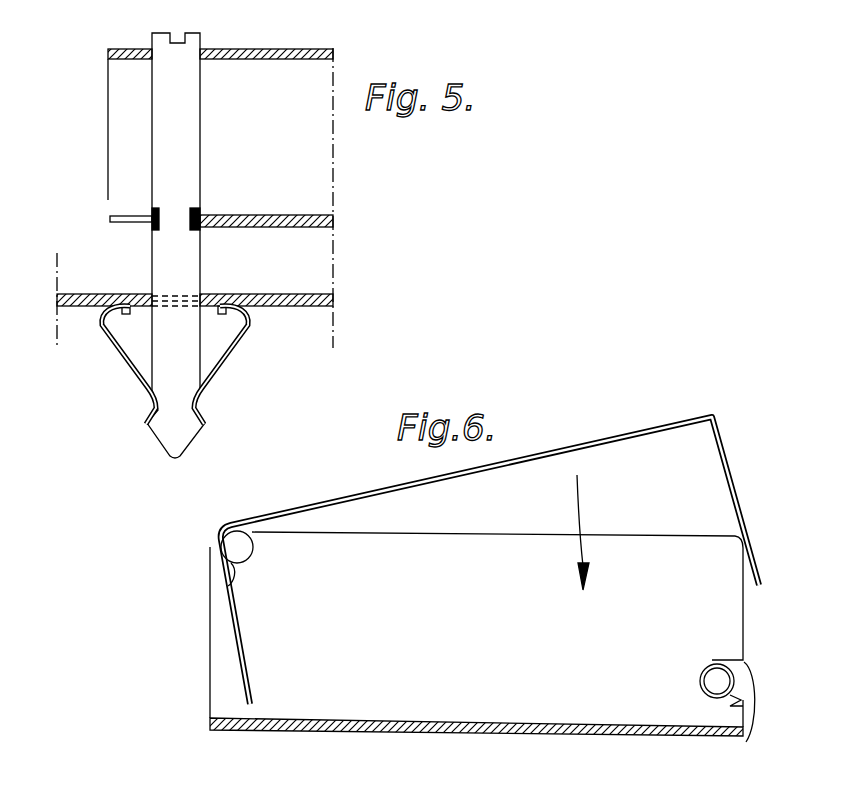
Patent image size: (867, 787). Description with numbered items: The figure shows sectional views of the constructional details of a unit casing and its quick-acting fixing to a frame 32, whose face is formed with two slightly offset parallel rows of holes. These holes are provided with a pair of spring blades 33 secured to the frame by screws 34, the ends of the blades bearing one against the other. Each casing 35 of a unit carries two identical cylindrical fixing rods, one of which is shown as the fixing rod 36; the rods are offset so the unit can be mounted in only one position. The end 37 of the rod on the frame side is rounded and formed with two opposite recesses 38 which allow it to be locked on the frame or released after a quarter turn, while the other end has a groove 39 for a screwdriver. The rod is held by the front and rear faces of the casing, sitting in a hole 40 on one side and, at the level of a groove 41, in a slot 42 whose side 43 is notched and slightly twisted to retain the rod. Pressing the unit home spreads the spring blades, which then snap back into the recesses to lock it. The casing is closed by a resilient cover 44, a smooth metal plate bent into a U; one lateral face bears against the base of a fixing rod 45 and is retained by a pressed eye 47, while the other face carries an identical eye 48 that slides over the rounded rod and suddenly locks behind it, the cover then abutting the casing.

In FIG. 5, the frame 32 is at (334, 300).
In FIG. 5, the spring blades 33 is at (130, 366).
In FIG. 5, the screws 34 is at (240, 341).
In FIG. 5, the casing 35 is at (293, 188).
In FIG. 6, the casing 35 is at (437, 693).
In FIG. 5, the fixing rod 36 is at (152, 257).
In FIG. 6, the fixing rod 36 is at (708, 683).
In FIG. 5, the end of the rod 37 is at (162, 456).
In FIG. 5, the recesses 38 is at (153, 406).
In FIG. 5, the groove 39 is at (168, 36).
In FIG. 5, the hole 40 is at (208, 58).
In FIG. 5, the groove 41 is at (205, 222).
In FIG. 5, the slot 42 is at (125, 214).
In FIG. 6, the slot 42 is at (748, 740).
In FIG. 6, the side 43 is at (727, 700).
In FIG. 6, the resilient cover 44 is at (390, 488).
In FIG. 6, the fixing rod 45 is at (226, 545).
In FIG. 6, the eye 47 is at (224, 578).
In FIG. 6, the eye 48 is at (742, 557).